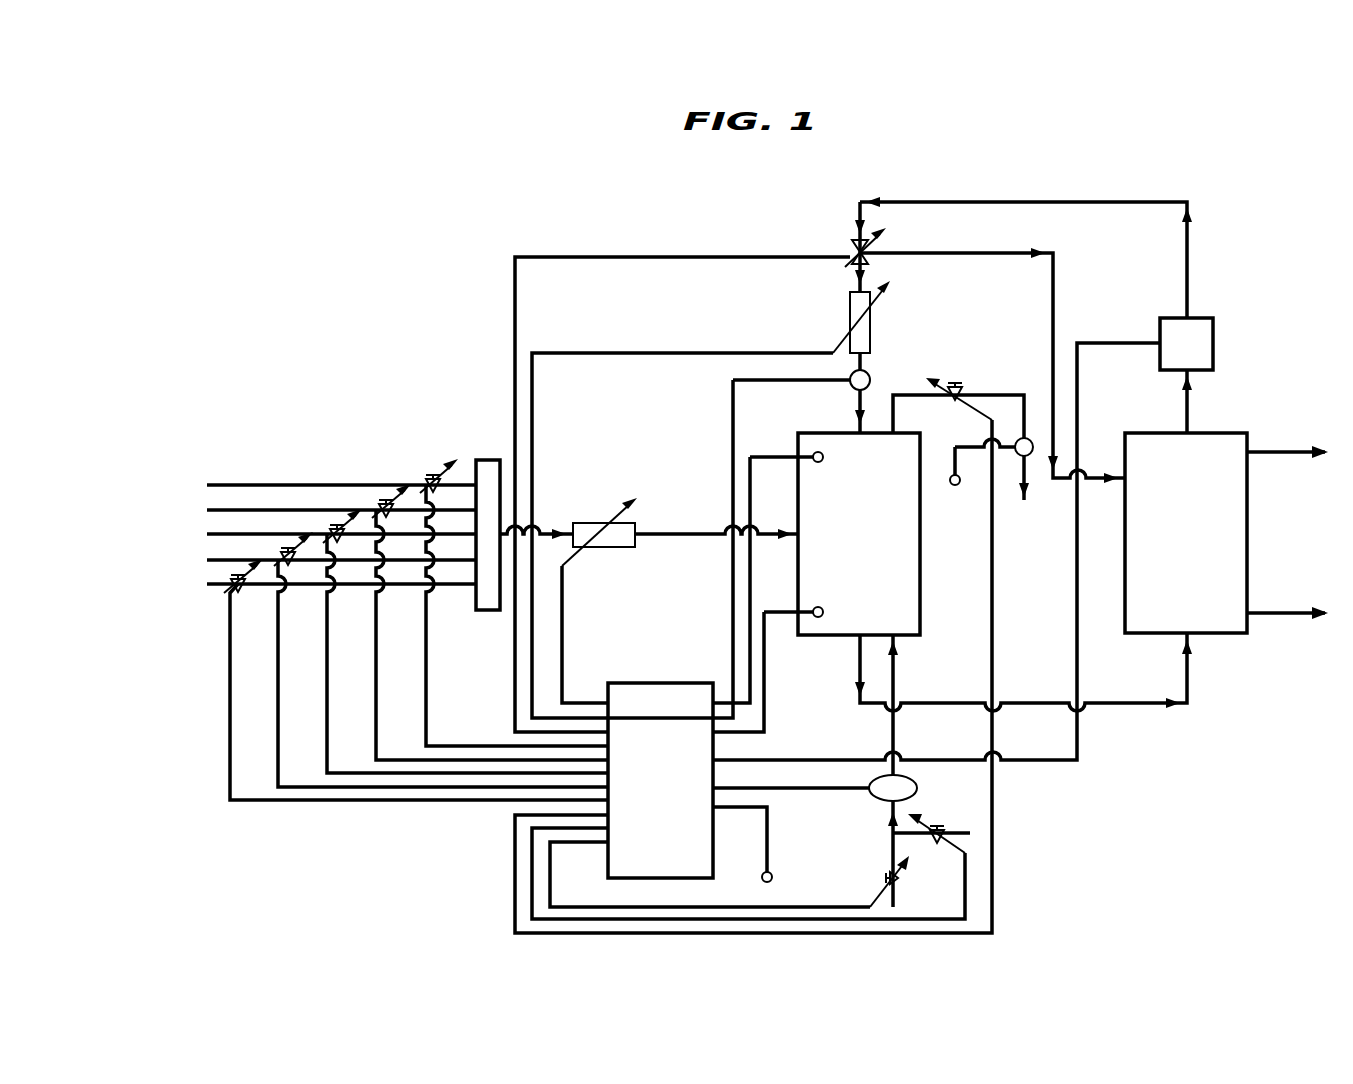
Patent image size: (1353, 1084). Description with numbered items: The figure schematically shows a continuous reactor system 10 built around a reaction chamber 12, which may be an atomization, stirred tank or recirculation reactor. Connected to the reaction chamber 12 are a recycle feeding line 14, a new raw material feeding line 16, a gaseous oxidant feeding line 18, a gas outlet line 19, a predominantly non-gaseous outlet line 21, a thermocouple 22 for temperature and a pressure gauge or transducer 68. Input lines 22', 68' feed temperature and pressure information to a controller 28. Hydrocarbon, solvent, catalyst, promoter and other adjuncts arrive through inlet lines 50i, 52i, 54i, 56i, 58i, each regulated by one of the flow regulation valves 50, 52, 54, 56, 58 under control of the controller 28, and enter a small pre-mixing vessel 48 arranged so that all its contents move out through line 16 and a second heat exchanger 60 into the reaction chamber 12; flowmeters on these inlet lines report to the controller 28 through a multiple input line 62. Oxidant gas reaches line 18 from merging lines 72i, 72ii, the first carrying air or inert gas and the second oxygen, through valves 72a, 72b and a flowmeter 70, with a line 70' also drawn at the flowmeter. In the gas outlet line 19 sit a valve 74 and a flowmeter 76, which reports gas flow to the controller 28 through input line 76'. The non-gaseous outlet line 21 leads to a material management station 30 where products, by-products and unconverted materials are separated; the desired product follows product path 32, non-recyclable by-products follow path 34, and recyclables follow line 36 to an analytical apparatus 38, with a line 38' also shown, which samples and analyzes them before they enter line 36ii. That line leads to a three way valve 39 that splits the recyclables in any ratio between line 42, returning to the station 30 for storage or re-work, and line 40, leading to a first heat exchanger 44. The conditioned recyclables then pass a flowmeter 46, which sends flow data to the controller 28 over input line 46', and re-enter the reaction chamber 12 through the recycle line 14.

The continuous reactor system 10 is at (306, 262).
The reaction chamber 12 is at (921, 522).
The recycle feeding line 14 is at (866, 402).
The new raw material feeding line 16 is at (682, 534).
The gaseous oxidant feeding line 18 is at (895, 725).
The gas outlet line 19 is at (993, 395).
The predominantly non-gaseous outlet line 21 is at (1100, 705).
The thermocouple 22 is at (856, 459).
The input line 22' is at (781, 423).
The controller 28 is at (632, 683).
The material management station 30 is at (1248, 510).
The product path 32 is at (1280, 452).
The non-recyclables path 34 is at (1280, 613).
The recyclables line 36 is at (1190, 412).
The line 36ii is at (1090, 202).
The analytical apparatus 38 is at (1224, 344).
The signal line 38' is at (936, 551).
The three way valve 39 is at (850, 248).
The line 40 is at (855, 264).
The line 42 is at (1053, 305).
The first heat exchanger 44 is at (850, 322).
The flowmeter 46 is at (739, 536).
The input line 46' is at (705, 549).
The pre-mixing vessel 48 is at (488, 460).
The flow regulation valve 50 is at (433, 473).
The flow regulation valve 52 is at (386, 497).
The flow regulation valve 54 is at (337, 522).
The flow regulation valve 56 is at (288, 545).
The flow regulation valve 58 is at (228, 600).
The inlet line 50i is at (210, 485).
The inlet line 52i is at (210, 510).
The inlet line 54i is at (210, 534).
The inlet line 56i is at (210, 560).
The inlet line 58i is at (210, 584).
The second heat exchanger 60 is at (590, 523).
The multiple input line 62 is at (767, 860).
The pressure gauge or transducer 68 is at (838, 577).
The input line 68' is at (776, 672).
The flowmeter 70 is at (926, 780).
The control line 70' is at (791, 814).
The valve 72a is at (890, 866).
The valve 72b is at (968, 832).
The line 72i is at (893, 903).
The line 72ii is at (972, 834).
The valve 74 is at (955, 383).
The flowmeter 76 is at (1034, 434).
The input line 76' is at (971, 447).